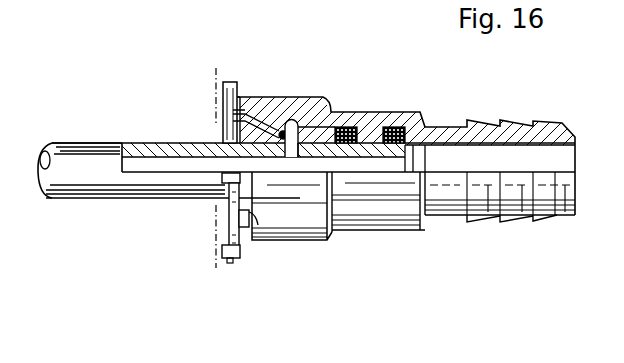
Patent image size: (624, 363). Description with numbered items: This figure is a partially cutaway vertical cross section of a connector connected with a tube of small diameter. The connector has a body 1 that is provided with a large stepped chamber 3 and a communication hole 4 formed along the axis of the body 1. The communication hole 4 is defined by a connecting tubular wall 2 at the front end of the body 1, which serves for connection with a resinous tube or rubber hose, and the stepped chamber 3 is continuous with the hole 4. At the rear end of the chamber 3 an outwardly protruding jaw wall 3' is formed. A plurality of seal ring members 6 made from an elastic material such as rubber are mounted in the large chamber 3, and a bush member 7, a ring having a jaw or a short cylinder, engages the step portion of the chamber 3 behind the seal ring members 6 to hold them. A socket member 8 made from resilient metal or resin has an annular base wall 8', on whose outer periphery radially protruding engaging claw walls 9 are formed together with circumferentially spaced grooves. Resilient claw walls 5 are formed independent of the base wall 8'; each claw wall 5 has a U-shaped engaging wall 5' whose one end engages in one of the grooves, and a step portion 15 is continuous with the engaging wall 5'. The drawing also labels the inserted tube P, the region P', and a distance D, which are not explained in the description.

The body 1 is at (400, 220).
The connecting tubular wall 2 is at (516, 210).
The stepped chamber 3 is at (331, 189).
The jaw wall 3' is at (270, 90).
The communication hole 4 is at (525, 157).
The resilient claw wall 5 is at (261, 81).
The U-shaped engaging wall 5' is at (232, 167).
The seal ring member 6 is at (394, 125).
The bush member 7 is at (318, 126).
The socket member 8 is at (173, 101).
The base wall 8' is at (190, 236).
The engaging claw wall 9 is at (250, 213).
The step portion 15 is at (242, 128).
The pipe P is at (169, 200).
The pipe bore P' is at (313, 105).
The distance D is at (206, 81).